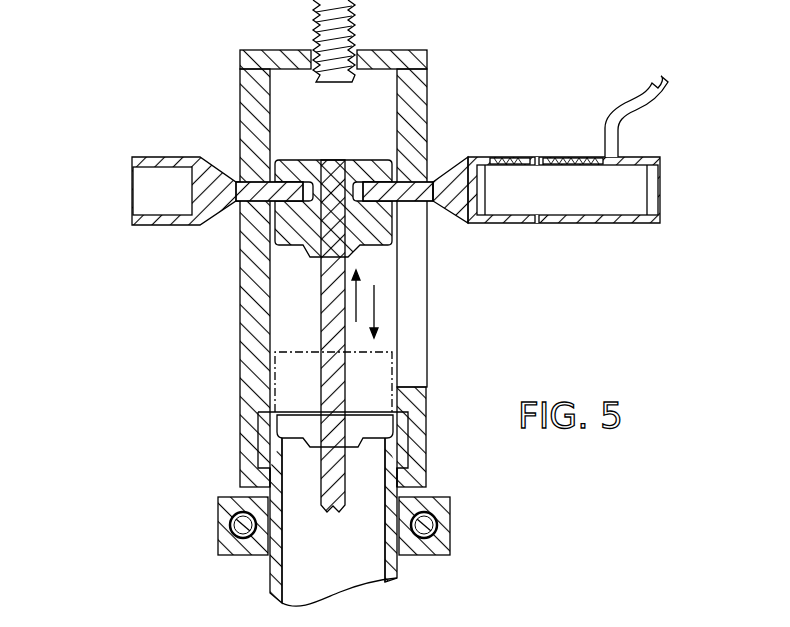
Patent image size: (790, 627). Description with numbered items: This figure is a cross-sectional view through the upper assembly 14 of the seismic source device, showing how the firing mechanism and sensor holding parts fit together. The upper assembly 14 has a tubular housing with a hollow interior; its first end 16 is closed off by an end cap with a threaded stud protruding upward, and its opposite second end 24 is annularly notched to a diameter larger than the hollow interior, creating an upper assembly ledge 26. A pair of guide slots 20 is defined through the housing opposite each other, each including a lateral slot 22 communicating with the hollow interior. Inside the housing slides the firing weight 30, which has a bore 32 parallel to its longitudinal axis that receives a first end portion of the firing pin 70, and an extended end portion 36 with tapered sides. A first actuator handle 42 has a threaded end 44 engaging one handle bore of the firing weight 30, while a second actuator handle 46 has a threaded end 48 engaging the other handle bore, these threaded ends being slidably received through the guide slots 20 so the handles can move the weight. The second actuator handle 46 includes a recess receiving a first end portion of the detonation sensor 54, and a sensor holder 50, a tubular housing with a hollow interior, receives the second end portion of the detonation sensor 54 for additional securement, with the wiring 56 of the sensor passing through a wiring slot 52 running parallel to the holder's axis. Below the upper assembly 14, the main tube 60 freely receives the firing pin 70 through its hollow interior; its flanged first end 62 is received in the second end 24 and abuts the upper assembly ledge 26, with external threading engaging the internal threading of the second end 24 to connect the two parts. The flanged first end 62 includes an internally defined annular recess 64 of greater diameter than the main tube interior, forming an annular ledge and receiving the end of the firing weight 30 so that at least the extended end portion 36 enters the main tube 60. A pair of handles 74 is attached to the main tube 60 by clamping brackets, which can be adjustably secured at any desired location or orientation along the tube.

The upper assembly 14 is at (240, 115).
The first end 16 is at (280, 50).
The guide slots 20 is at (333, 249).
The lateral slot 22 is at (240, 177).
The second end 24 is at (270, 477).
The upper assembly ledge 26 is at (270, 412).
The firing weight 30 is at (367, 160).
The bore 32 is at (306, 258).
The extended end portion 36 is at (393, 256).
The first actuator handle 42 is at (132, 157).
The threaded end 44 is at (240, 213).
The second actuator handle 46 is at (498, 223).
The threaded end 48 is at (433, 178).
The sensor holder 50 is at (609, 192).
The wiring slot 52 is at (620, 158).
The detonation sensor 54 is at (627, 190).
The wiring 56 is at (625, 85).
The main tube 60 is at (270, 568).
The flanged first end 62 is at (412, 432).
The annular recess 64 is at (405, 412).
The firing pin 70 is at (321, 318).
The handles 74 is at (218, 520).